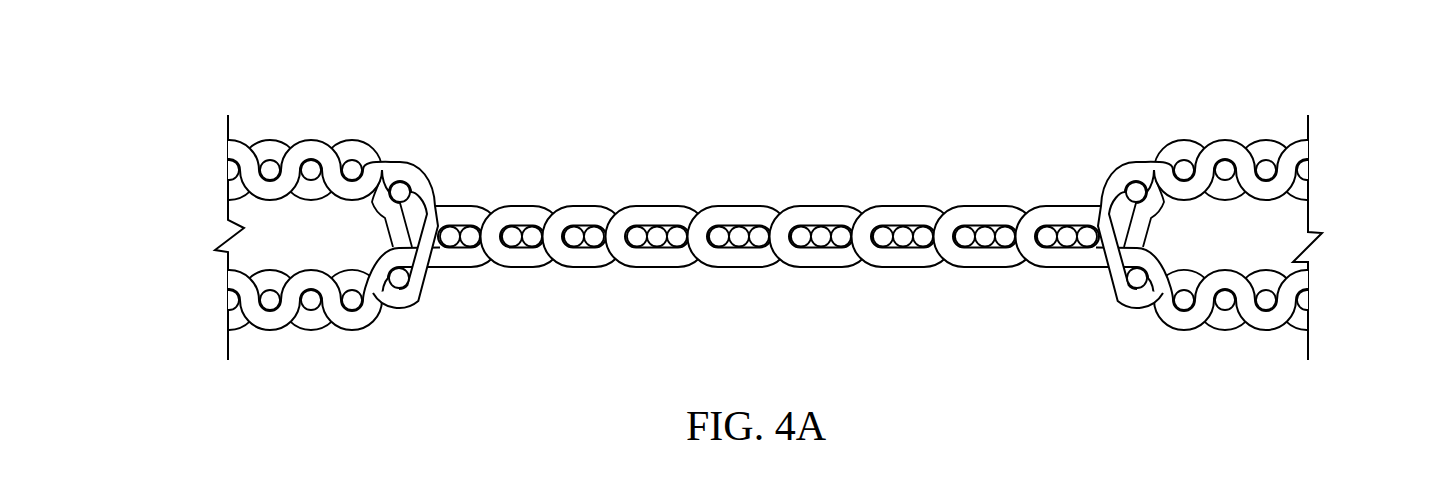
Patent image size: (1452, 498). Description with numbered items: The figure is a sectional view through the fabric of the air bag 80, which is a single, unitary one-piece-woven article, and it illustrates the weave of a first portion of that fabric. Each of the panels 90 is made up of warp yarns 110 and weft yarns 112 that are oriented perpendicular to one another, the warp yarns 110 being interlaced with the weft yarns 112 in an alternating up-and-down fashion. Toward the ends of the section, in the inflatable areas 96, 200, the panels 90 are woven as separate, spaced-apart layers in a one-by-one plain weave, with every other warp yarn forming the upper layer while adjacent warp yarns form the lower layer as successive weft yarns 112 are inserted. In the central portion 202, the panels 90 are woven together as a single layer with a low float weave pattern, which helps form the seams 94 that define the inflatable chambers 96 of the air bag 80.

The air bag 80 is at (749, 224).
The panels 90 is at (749, 224).
The seams 94 is at (768, 192).
The inflatable chambers 96 is at (749, 237).
The warp yarns 110 is at (229, 152).
The weft yarns 112 is at (310, 168).
The plain woven portions 200 is at (749, 237).
The low float weave portions 202 is at (586, 177).